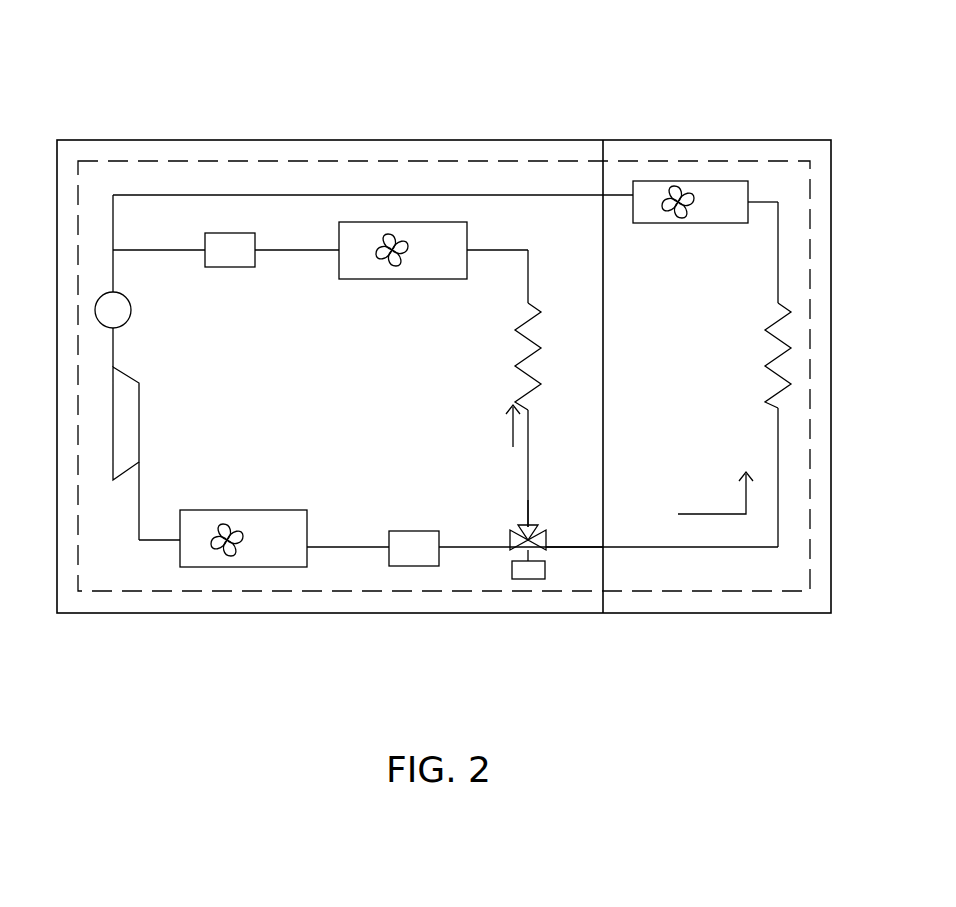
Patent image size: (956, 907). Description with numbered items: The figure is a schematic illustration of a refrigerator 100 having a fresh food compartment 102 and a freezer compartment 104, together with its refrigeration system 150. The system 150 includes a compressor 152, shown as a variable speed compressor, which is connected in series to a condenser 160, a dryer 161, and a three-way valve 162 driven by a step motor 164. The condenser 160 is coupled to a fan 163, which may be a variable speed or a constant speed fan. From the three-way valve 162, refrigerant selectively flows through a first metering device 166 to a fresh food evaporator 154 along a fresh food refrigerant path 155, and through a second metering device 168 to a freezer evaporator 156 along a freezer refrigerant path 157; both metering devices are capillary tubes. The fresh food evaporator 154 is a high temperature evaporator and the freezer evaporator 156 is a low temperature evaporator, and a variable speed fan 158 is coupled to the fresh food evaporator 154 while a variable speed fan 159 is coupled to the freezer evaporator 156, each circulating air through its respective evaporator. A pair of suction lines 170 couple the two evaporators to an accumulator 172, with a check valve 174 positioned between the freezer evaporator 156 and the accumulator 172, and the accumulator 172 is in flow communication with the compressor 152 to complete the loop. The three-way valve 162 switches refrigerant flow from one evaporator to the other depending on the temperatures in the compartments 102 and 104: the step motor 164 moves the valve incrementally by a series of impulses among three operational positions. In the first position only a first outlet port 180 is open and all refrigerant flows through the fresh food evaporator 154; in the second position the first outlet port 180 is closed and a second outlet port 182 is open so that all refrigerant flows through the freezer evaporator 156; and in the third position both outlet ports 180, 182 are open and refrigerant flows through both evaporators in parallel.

The refrigerator 100 is at (449, 60).
The fresh food compartment 102 is at (700, 140).
The freezer compartment 104 is at (372, 140).
The refrigeration system 150 is at (193, 161).
The compressor 152 is at (139, 420).
The fresh food evaporator 154 is at (656, 223).
The fresh food refrigerant path 155 is at (705, 513).
The freezer evaporator 156 is at (358, 279).
The freezer refrigerant path 157 is at (513, 445).
The variable speed fan 158 is at (700, 223).
The variable speed fan 159 is at (413, 270).
The condenser 160 is at (245, 510).
The dryer 161 is at (415, 531).
The three-way valve 162 is at (543, 520).
The fan 163 is at (247, 567).
The step motor 164 is at (545, 568).
The first metering device 166 is at (760, 362).
The second metering device 168 is at (510, 353).
The suction lines 170 is at (122, 200).
The accumulator 172 is at (131, 310).
The check valve 174 is at (240, 267).
The first outlet port 180 is at (546, 537).
The second outlet port 182 is at (525, 524).